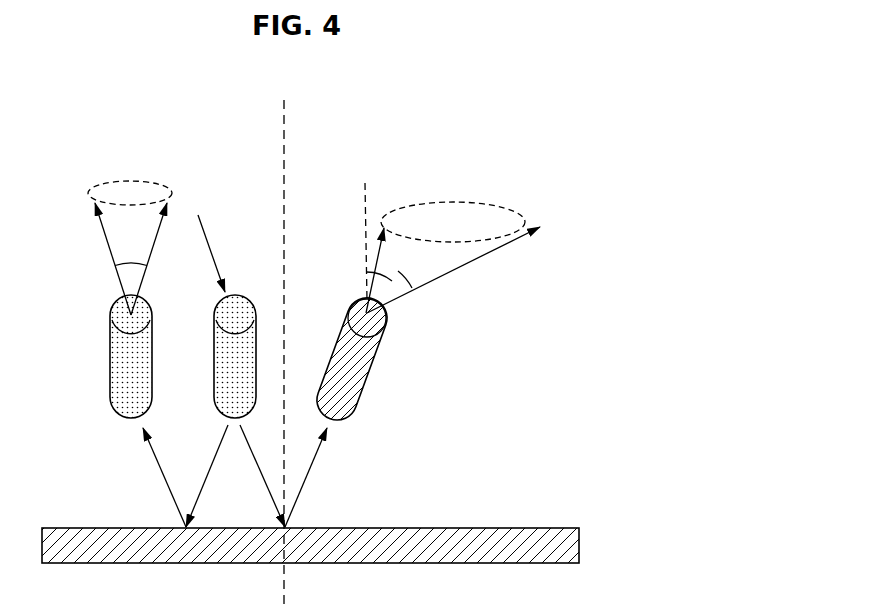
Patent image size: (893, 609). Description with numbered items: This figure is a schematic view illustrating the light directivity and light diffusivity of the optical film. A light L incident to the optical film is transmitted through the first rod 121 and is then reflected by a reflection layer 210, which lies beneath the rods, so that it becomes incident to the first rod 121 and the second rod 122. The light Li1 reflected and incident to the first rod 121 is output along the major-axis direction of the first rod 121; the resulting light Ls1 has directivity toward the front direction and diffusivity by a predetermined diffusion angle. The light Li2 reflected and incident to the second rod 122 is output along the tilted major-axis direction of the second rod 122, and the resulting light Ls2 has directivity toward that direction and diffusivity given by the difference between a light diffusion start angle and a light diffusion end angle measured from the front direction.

The first rod 121 is at (215, 378).
The second rod 122 is at (372, 363).
The reflection layer 210 is at (458, 538).
The light L is at (207, 237).
The light output from the first rod Ls1 is at (106, 238).
The light output from the second rod Ls2 is at (493, 253).
The light reflected and incident to the first rod Li1 is at (168, 492).
The light reflected and incident to the second rod Li2 is at (315, 457).